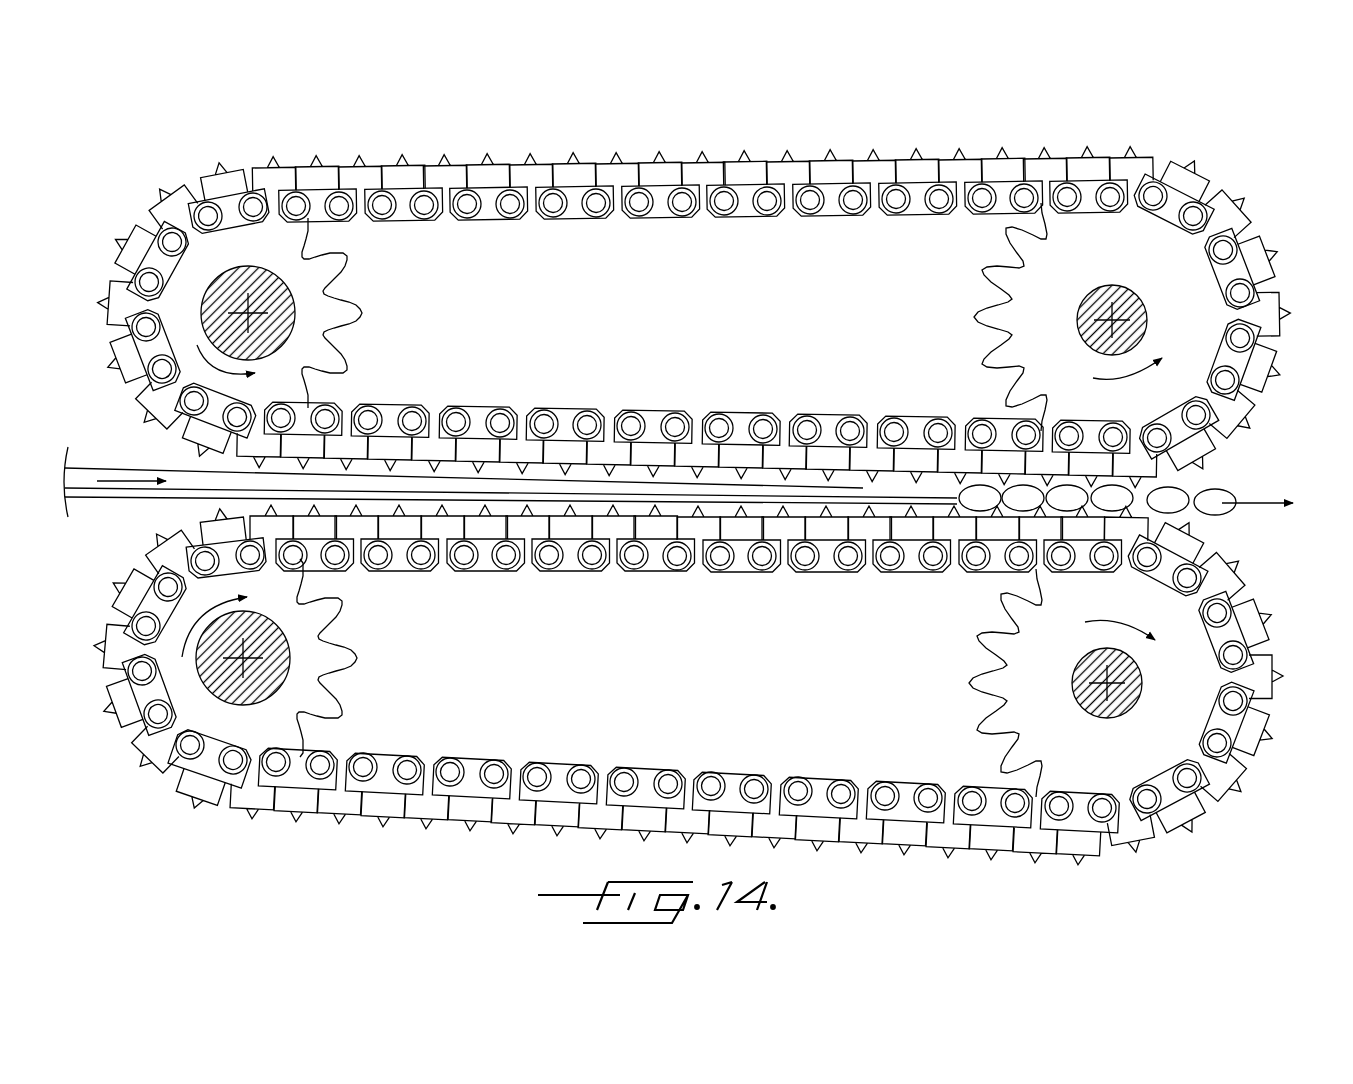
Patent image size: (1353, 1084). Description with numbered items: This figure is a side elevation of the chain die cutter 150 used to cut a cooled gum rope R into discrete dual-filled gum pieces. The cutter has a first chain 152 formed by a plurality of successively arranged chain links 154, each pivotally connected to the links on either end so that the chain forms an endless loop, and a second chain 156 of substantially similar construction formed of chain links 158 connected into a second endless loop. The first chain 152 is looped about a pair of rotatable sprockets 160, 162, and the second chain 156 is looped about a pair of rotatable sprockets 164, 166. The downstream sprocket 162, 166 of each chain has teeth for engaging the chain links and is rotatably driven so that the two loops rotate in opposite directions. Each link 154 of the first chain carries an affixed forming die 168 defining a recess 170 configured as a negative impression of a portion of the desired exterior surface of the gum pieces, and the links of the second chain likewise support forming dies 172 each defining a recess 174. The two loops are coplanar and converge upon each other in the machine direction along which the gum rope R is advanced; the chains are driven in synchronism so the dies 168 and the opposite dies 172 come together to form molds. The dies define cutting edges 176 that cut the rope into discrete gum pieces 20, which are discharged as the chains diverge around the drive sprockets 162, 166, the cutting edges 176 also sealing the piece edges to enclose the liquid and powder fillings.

The cutter 150 is at (468, 128).
The first chain 152 is at (685, 227).
The chain links 154 is at (768, 207).
The second chain 156 is at (704, 578).
The chain links 158 is at (750, 565).
The sprocket 160 is at (327, 313).
The downstream sprocket 162 is at (1003, 327).
The sprocket 164 is at (317, 647).
The downstream sprocket 166 is at (1005, 683).
The forming die 168 is at (1185, 180).
The recess 170 is at (1221, 181).
The forming dies 172 is at (1232, 560).
The recess 174 is at (1247, 578).
The cutting edges 176 is at (928, 158).
The gum pieces 20 is at (1190, 486).
The gum rope R is at (100, 456).